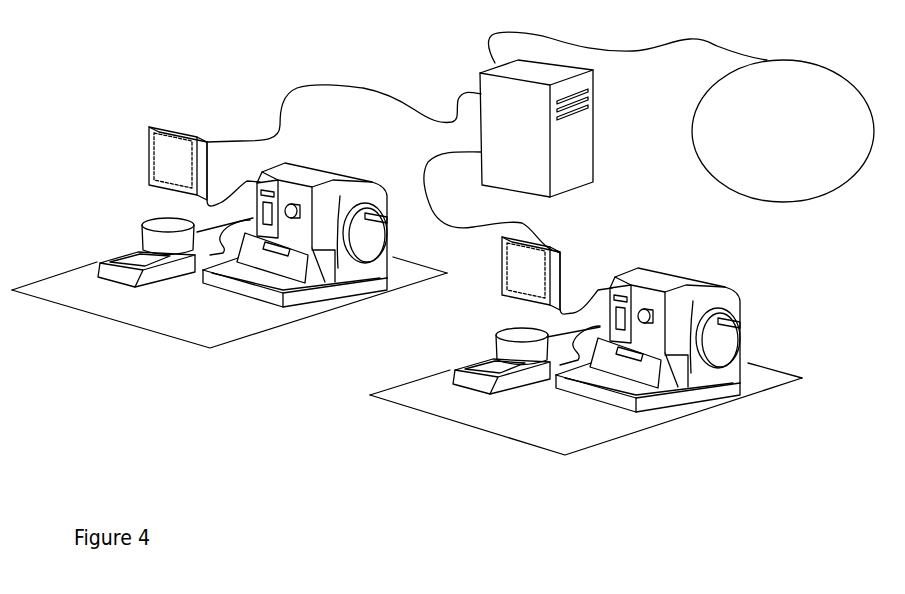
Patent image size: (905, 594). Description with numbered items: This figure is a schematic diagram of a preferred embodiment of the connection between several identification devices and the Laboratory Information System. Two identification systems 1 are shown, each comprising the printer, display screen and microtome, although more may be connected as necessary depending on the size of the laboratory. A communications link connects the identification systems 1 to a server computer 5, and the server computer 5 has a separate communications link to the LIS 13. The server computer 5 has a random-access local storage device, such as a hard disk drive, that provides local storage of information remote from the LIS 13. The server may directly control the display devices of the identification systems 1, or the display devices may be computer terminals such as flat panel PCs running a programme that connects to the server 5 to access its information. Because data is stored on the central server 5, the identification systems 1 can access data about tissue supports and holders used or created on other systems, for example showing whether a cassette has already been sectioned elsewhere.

The identification system 1 is at (234, 350).
The server computer 5 is at (590, 187).
The Laboratory Information System 13 is at (783, 131).